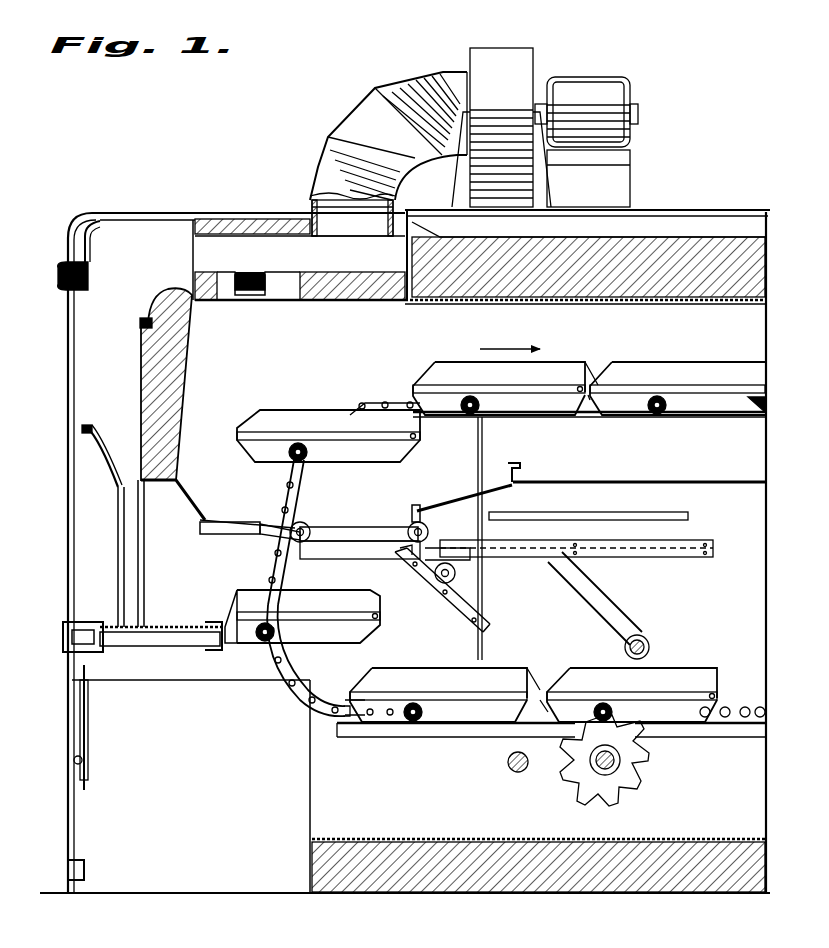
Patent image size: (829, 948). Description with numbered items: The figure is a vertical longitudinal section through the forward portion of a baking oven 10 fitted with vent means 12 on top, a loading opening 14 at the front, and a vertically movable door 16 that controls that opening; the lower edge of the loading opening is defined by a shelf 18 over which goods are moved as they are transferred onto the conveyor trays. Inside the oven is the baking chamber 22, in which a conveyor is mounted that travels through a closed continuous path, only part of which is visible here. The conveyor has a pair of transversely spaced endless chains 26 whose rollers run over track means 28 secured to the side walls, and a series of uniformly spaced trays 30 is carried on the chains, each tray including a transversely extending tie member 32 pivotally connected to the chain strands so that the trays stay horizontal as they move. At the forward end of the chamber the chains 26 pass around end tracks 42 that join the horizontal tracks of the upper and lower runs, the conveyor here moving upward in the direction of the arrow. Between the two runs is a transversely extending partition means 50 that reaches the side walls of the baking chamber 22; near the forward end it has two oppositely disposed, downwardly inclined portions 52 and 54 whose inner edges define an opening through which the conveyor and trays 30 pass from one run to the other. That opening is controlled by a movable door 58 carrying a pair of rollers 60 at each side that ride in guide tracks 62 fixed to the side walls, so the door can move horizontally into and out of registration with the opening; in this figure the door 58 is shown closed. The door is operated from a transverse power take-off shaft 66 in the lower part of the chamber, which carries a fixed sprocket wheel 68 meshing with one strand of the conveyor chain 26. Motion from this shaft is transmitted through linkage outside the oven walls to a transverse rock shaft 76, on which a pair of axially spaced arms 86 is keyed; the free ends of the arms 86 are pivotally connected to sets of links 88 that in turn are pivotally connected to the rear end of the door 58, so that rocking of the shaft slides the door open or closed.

The baking oven 10 is at (240, 210).
The vent means 12 is at (318, 165).
The loading opening 14 is at (160, 556).
The vertically movable door 16 is at (120, 564).
The shelf 18 is at (116, 625).
The baking chamber 22 is at (200, 330).
The endless chains 26 is at (292, 700).
The track means 28 is at (610, 418).
The trays 30 is at (650, 367).
The tie member 32 is at (405, 730).
The end tracks 42 is at (284, 575).
The partition means 50 is at (560, 476).
The downwardly inclined portion 52 is at (188, 508).
The downwardly inclined portion 54 is at (453, 496).
The movable door 58 is at (355, 524).
The rollers 60 is at (308, 522).
The guide tracks 62 is at (614, 556).
The power take-off shaft 66 is at (622, 760).
The sprocket wheel 68 is at (630, 778).
The rock shaft 76 is at (650, 643).
The arms 86 is at (552, 596).
The links 88 is at (470, 565).